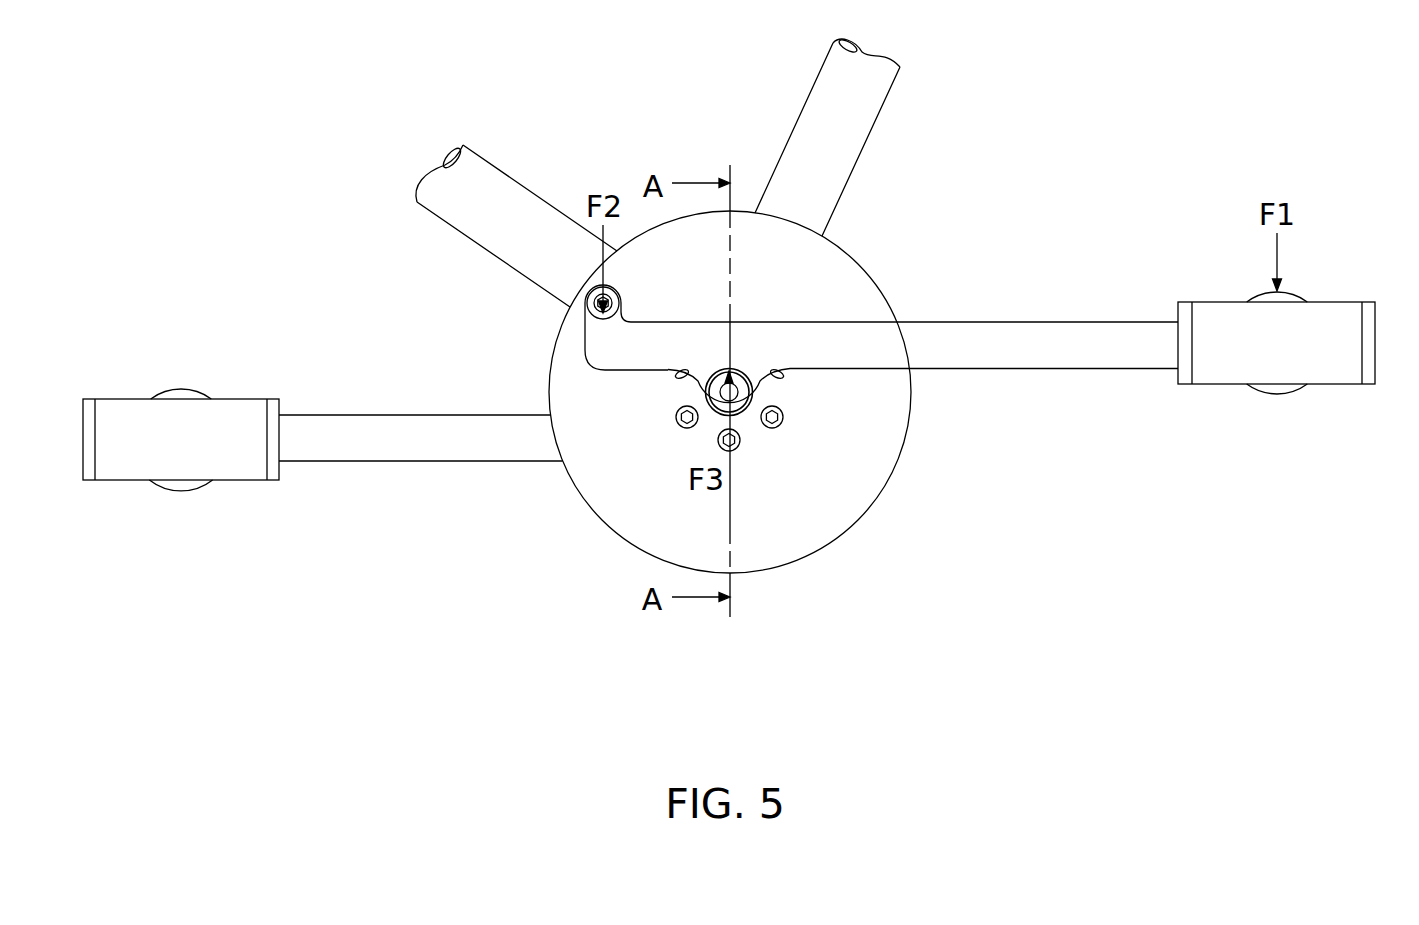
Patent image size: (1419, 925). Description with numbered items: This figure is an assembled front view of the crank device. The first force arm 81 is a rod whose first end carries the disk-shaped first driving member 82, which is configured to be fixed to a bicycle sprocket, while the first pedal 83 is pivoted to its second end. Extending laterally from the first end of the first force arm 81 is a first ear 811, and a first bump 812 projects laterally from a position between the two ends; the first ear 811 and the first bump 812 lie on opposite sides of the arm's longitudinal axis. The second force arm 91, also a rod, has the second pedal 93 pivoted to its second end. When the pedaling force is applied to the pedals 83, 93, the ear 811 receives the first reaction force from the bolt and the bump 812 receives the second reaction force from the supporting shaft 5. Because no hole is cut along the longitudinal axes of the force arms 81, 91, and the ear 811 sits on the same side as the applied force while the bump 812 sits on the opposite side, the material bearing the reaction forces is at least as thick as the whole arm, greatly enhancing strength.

The supporting shaft 5 is at (800, 318).
The first force arm 81 is at (904, 402).
The first ear 811 is at (559, 332).
The first bump 812 is at (801, 472).
The first driving member 82 is at (730, 452).
The first pedal 83 is at (1293, 292).
The second force arm 91 is at (421, 514).
The second pedal 93 is at (181, 381).